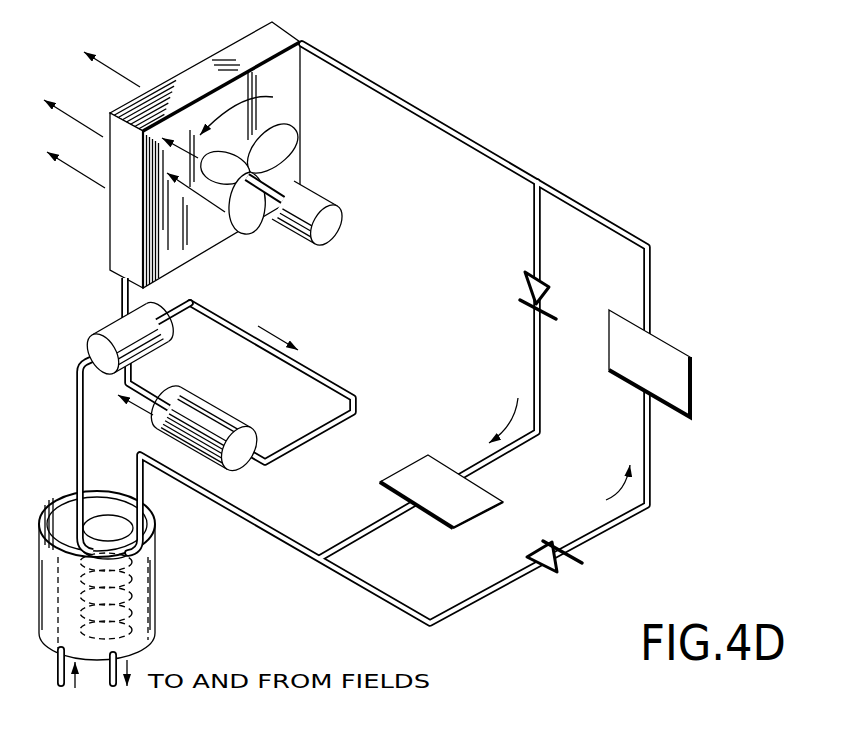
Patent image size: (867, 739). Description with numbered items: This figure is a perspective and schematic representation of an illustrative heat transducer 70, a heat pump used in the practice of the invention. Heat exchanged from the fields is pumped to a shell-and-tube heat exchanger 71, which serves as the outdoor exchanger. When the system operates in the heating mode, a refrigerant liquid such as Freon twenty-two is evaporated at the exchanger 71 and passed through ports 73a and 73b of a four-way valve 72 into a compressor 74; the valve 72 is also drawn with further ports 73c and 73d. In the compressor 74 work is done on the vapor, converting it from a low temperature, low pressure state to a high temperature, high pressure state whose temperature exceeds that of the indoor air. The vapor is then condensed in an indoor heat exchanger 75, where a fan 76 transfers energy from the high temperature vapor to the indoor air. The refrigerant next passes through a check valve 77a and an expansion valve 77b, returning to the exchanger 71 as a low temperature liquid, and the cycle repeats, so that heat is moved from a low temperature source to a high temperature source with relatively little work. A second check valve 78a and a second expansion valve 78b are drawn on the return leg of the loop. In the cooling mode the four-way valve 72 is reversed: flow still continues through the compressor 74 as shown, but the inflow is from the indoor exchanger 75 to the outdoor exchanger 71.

The heat transducer 70 is at (168, 38).
The shell-and-tube heat exchanger 71 is at (154, 590).
The four-way valve 72 is at (100, 340).
The port 73a is at (91, 358).
The port 73b is at (163, 323).
The pump port 73c is at (132, 362).
The pump port 73d is at (121, 322).
The compressor 74 is at (223, 418).
The indoor heat exchanger 75 is at (295, 80).
The fan 76 is at (308, 162).
The check valve 77a is at (524, 281).
The expansion valve 77b is at (414, 468).
The check valve 78a is at (558, 568).
The plate 78b is at (680, 380).